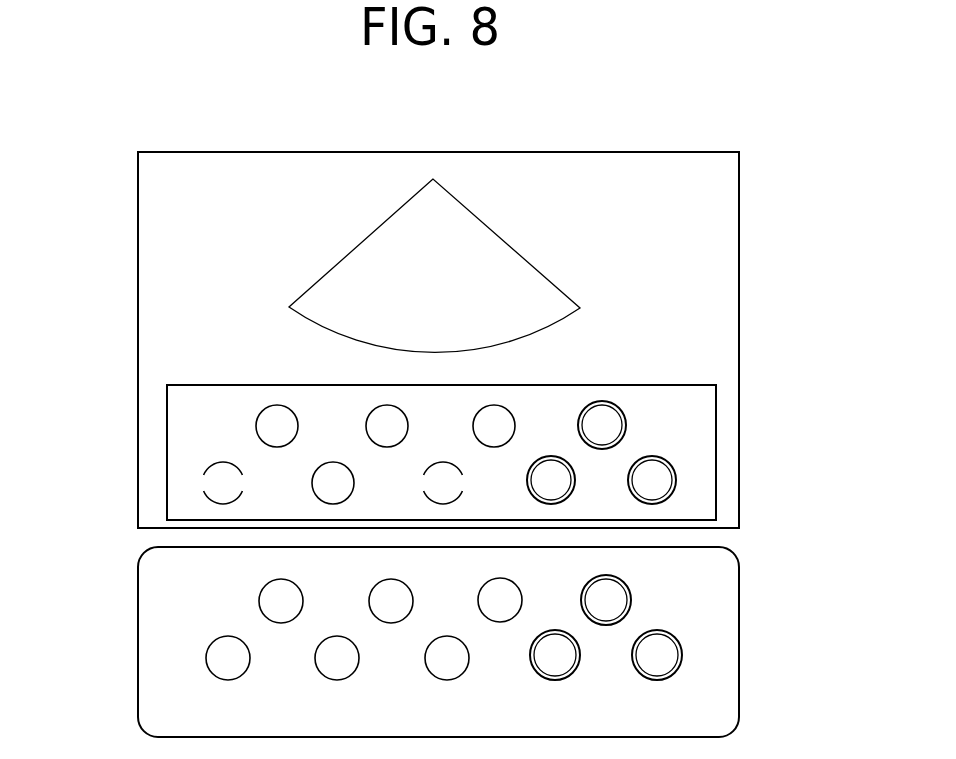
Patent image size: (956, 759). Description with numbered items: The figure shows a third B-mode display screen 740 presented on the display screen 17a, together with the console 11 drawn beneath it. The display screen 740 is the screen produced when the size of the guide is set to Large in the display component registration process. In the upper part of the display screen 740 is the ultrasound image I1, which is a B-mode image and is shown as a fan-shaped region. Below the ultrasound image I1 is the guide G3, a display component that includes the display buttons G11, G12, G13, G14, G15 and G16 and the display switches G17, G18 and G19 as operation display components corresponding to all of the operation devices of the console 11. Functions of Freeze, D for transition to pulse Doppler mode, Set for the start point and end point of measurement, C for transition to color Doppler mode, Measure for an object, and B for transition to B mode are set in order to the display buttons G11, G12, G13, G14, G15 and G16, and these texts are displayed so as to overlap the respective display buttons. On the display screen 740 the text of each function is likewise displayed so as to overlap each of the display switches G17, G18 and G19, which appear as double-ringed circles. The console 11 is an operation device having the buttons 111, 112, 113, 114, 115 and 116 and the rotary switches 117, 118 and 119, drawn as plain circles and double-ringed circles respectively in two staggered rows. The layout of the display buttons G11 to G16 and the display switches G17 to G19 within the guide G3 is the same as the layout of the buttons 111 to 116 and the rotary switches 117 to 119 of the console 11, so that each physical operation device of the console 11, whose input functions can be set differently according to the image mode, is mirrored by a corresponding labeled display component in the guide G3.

The display screen 17a is at (434, 340).
The B-mode display screen 740 is at (728, 183).
The ultrasound image I1 is at (507, 240).
The guide G3 is at (716, 447).
The display button G11 is at (237, 465).
The display button G12 is at (258, 412).
The display button G13 is at (347, 465).
The display button G14 is at (366, 413).
The display button G15 is at (455, 465).
The display button G16 is at (477, 413).
The display switch G17 is at (547, 457).
The display switch G18 is at (606, 400).
The display switch G19 is at (670, 460).
The console 11 is at (739, 590).
The button 111 is at (208, 670).
The button 112 is at (298, 587).
The button 113 is at (318, 670).
The button 114 is at (408, 587).
The button 115 is at (428, 670).
The button 116 is at (518, 585).
The rotary switch 117 is at (537, 672).
The rotary switch 118 is at (627, 585).
The rotary switch 119 is at (640, 672).